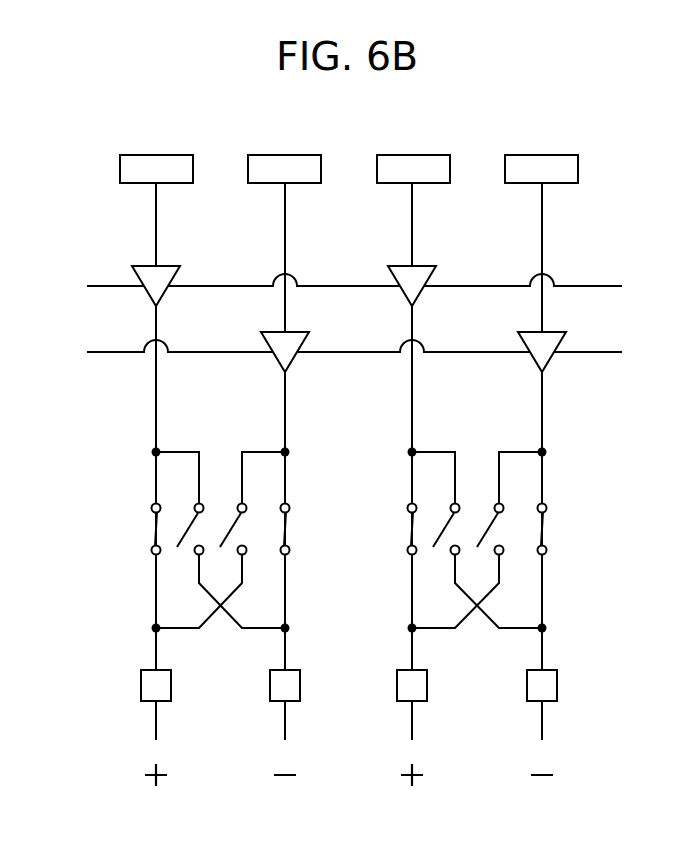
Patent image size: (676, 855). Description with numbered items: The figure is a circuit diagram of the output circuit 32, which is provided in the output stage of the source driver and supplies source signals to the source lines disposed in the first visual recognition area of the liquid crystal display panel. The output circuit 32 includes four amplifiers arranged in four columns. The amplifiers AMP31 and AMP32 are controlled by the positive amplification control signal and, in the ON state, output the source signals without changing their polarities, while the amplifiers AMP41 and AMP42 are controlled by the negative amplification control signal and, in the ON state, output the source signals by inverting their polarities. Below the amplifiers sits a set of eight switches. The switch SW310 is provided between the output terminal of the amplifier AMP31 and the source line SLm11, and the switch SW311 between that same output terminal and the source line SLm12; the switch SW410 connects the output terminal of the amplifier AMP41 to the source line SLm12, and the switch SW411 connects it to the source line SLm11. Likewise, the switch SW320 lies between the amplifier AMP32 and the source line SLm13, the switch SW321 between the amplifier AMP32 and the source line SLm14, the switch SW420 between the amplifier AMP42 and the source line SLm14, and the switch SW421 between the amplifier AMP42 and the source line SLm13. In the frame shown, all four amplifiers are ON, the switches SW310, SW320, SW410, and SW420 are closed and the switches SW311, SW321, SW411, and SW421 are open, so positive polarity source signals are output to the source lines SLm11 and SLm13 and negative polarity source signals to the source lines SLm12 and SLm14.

The output circuit 32 is at (339, 450).
The amplifier AMP31 is at (141, 272).
The amplifier AMP32 is at (399, 272).
The amplifier AMP41 is at (294, 360).
The amplifier AMP42 is at (538, 360).
The switch SW310 is at (153, 537).
The switch SW311 is at (185, 533).
The switch SW320 is at (415, 522).
The switch SW321 is at (453, 520).
The switch SW410 is at (282, 527).
The switch SW411 is at (233, 520).
The switch SW420 is at (540, 530).
The switch SW421 is at (488, 528).
The source line SLm11 is at (156, 722).
The source line SLm12 is at (285, 722).
The source line SLm13 is at (412, 722).
The source line SLm14 is at (542, 722).